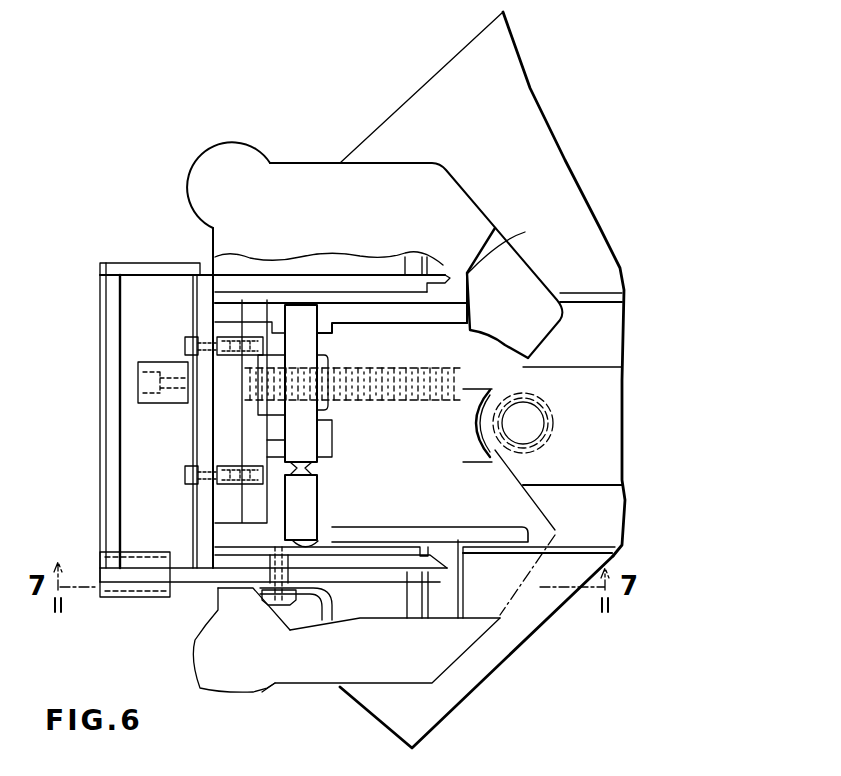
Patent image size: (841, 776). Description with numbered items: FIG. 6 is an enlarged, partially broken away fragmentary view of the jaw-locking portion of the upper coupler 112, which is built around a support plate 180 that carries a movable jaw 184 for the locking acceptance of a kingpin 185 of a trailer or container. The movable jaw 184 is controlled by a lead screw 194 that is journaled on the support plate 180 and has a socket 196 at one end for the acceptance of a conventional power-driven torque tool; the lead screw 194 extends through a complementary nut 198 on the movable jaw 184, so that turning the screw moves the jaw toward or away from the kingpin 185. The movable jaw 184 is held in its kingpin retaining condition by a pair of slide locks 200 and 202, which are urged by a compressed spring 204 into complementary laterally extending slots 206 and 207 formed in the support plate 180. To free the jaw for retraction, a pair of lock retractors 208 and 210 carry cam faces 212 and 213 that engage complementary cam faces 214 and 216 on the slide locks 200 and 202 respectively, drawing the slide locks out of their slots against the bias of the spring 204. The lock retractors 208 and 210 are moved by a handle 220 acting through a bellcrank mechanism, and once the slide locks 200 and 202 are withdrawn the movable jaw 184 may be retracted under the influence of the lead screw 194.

The support plate 180 is at (184, 141).
The movable jaw 184 is at (318, 172).
The upper coupler 112 is at (498, 210).
The cam face 213 is at (522, 249).
The laterally extending slot 207 is at (440, 270).
The lock retractor 210 is at (342, 283).
The slide lock 202 is at (313, 300).
The cam face 216 is at (290, 312).
The socket 196 is at (148, 360).
The handle 220 is at (94, 370).
The lead screw 194 is at (396, 370).
The nut 198 is at (330, 412).
The compressed spring 204 is at (318, 470).
The slide lock 200 is at (322, 500).
The cam face 214 is at (322, 538).
The cam face 212 is at (440, 546).
The lock retractor 208 is at (335, 585).
The laterally extending slot 206 is at (450, 598).
The kingpin 185 is at (555, 420).